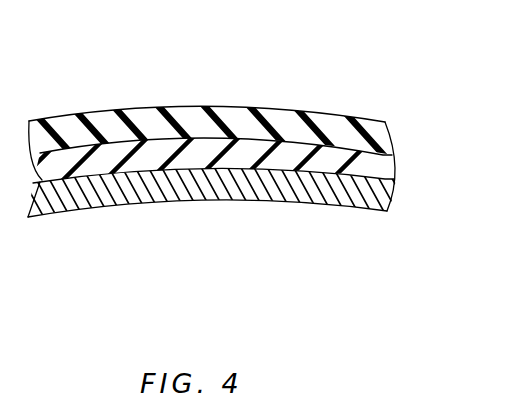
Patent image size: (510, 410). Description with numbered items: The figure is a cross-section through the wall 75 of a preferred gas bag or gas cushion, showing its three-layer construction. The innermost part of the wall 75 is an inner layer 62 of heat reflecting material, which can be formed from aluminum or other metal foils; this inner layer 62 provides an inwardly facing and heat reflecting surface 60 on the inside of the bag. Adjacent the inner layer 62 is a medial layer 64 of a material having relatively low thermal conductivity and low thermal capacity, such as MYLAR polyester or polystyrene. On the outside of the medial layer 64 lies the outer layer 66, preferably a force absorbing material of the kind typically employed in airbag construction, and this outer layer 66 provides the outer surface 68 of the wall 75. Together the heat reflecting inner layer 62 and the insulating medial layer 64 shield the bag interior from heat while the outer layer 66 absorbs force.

The wall 75 is at (223, 128).
The outer surface 68 is at (213, 106).
The outer layer 66 is at (386, 131).
The medial layer 64 is at (386, 170).
The inner layer 62 is at (225, 204).
The heat reflecting surface 60 is at (290, 203).